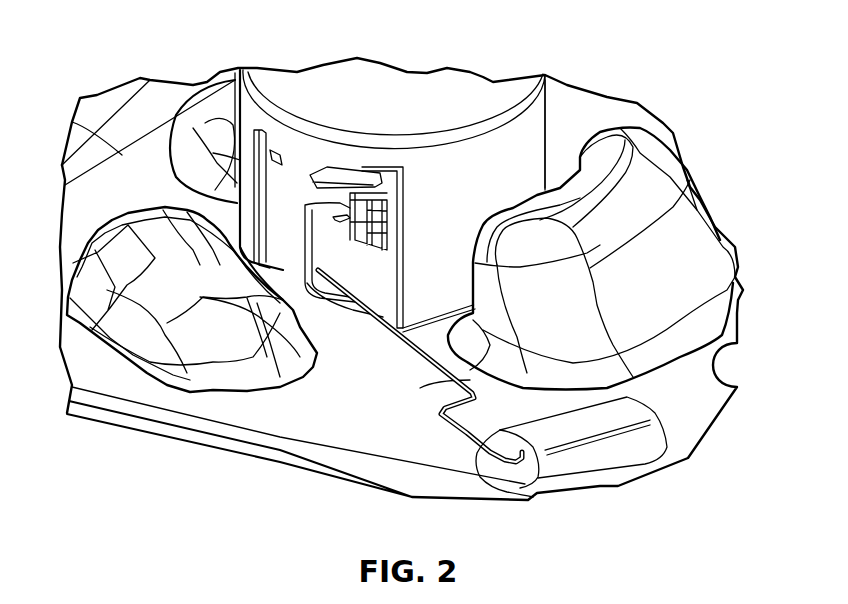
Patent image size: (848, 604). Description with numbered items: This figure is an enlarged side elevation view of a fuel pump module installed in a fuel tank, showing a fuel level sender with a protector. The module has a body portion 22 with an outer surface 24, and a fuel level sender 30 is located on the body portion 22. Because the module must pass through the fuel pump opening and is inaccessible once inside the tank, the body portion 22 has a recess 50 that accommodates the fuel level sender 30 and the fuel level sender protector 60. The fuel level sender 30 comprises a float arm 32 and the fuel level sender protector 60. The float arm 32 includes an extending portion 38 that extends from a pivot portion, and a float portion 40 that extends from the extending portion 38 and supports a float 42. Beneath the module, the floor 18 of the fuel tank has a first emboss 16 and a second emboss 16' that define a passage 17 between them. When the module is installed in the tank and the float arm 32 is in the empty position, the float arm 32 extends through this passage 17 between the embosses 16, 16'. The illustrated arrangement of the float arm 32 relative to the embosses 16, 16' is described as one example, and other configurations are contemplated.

The first emboss 16 is at (166, 299).
The second emboss 16' is at (618, 259).
The passage 17 is at (358, 342).
The floor 18 is at (255, 420).
The body portion 22 is at (313, 113).
The outer surface 24 is at (484, 189).
The fuel level sender 30 is at (410, 219).
The float arm 32 is at (660, 400).
The extending portion 38 is at (445, 400).
The float portion 40 is at (513, 498).
The float 42 is at (622, 447).
The recess 50 is at (268, 143).
The fuel level sender protector 60 is at (262, 207).